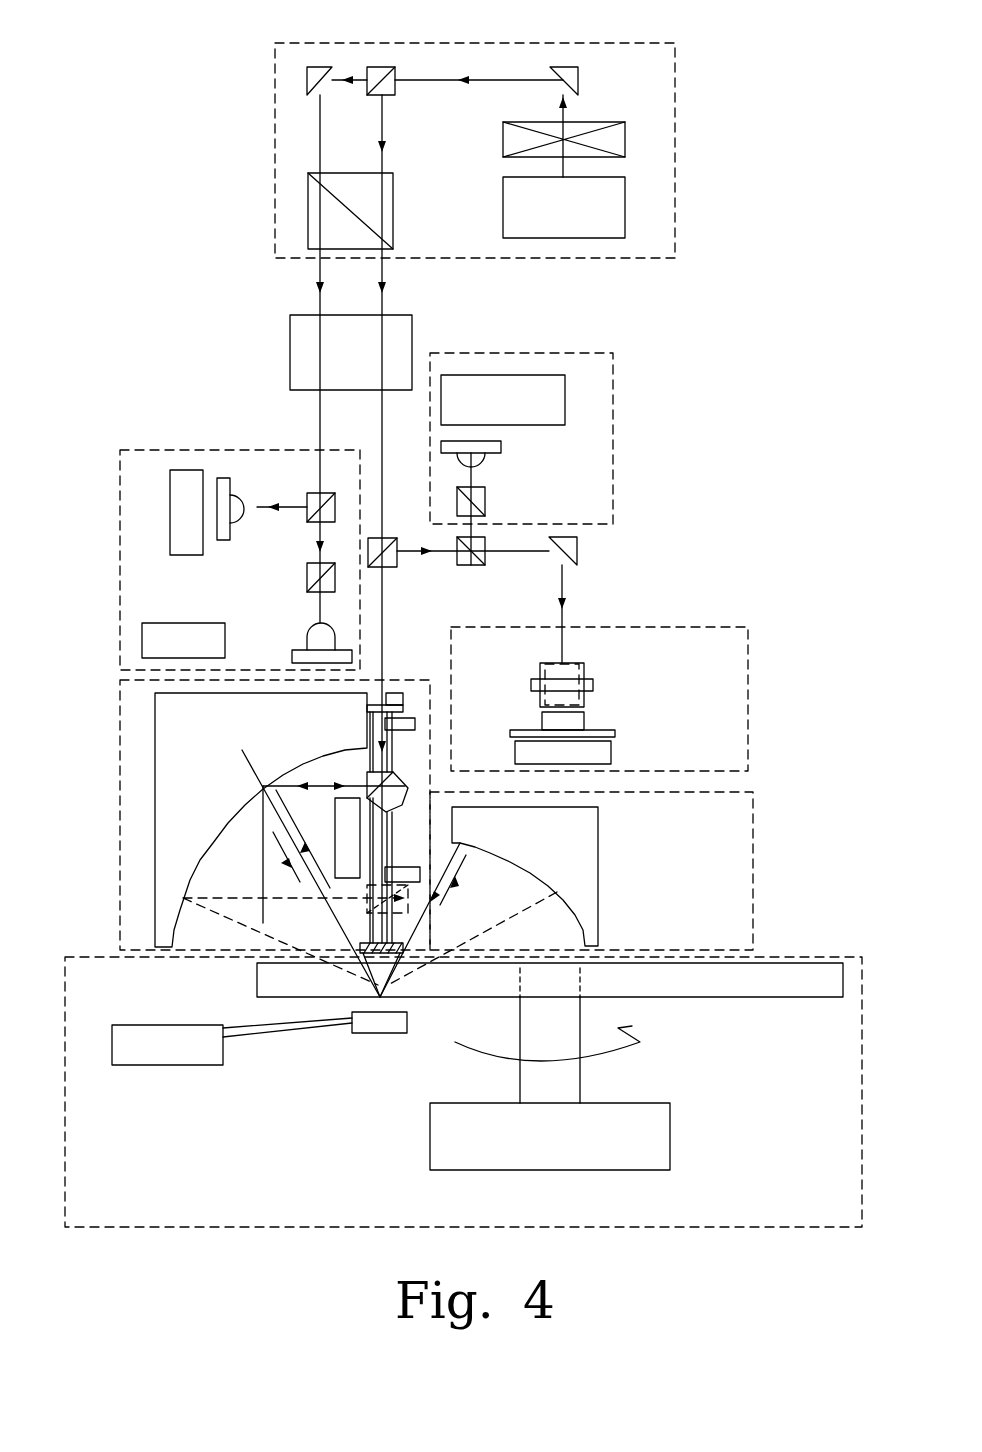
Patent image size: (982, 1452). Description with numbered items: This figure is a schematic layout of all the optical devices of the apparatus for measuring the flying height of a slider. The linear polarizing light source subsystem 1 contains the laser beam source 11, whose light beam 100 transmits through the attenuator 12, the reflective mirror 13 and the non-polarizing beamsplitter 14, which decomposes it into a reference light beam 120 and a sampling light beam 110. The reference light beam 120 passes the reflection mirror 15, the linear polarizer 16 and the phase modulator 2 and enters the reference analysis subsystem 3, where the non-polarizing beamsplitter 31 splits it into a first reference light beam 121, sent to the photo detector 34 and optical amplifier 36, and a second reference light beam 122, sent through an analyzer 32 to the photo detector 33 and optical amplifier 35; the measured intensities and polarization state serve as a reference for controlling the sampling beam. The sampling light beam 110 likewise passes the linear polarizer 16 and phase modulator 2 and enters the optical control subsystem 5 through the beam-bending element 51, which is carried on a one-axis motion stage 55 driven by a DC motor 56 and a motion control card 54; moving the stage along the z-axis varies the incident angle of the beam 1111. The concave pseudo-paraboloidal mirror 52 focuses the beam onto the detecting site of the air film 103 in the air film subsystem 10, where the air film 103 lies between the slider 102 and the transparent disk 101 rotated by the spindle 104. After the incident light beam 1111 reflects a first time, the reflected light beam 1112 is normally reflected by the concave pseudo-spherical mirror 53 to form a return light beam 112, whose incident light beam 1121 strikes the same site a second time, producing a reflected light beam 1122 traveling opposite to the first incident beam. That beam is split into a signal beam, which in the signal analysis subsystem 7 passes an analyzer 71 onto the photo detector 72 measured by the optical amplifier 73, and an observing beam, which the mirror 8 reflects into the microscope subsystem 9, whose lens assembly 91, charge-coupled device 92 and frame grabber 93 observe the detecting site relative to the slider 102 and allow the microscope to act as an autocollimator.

The linear polarizing light source subsystem 1 is at (297, 147).
The laser beam source 11 is at (613, 217).
The attenuator 12 is at (612, 142).
The reflective mirror 13 is at (573, 70).
The non-polarizing beamsplitter 14 is at (381, 81).
The reflection mirror 15 is at (313, 77).
The linear polarizer 16 is at (387, 208).
The light beam 100 is at (447, 62).
The sampling light beam 110 is at (318, 785).
The reference light beam 120 is at (315, 352).
The phase modulator 2 is at (302, 343).
The reference analysis subsystem 3 is at (131, 545).
The non-polarizing beamsplitter 31 is at (327, 500).
The analyzer 32 is at (305, 573).
The photo detector 33 is at (305, 647).
The photo detector 34 is at (238, 500).
The optical amplifier 35 is at (185, 637).
The optical amplifier 36 is at (183, 478).
The first reference light beam 121 is at (282, 490).
The second reference light beam 122 is at (298, 536).
The signal analysis subsystem 7 is at (593, 450).
The analyzer 71 is at (483, 496).
The photo detector 72 is at (483, 462).
The optical amplifier 73 is at (554, 413).
The mirror 8 is at (577, 553).
The microscope subsystem 9 is at (615, 634).
The lens assembly 91 is at (581, 684).
The charge-coupled device 92 is at (583, 721).
The frame grabber 93 is at (597, 751).
The optical control subsystem with variable incident angles 5 is at (133, 783).
The beam-bending element 51 is at (397, 795).
The concave pseudo-paraboloidal mirror 52 is at (173, 733).
The concave pseudo-spherical mirror 53 is at (578, 873).
The motion control card 54 is at (348, 812).
The one-axis motion stage 55 is at (377, 857).
The DC motor 56 is at (395, 697).
The incident light beam 1111 is at (272, 842).
The reflected light beam 1122 is at (286, 856).
The incident light beam 1121 is at (438, 877).
The return light beam 112 is at (458, 852).
The reflected light beam 1112 is at (445, 895).
The air film subsystem 10 is at (98, 967).
The transparent disk 101 is at (812, 978).
The slider 102 is at (378, 1028).
The air film 103 is at (377, 1003).
The spindle 104 is at (643, 1138).